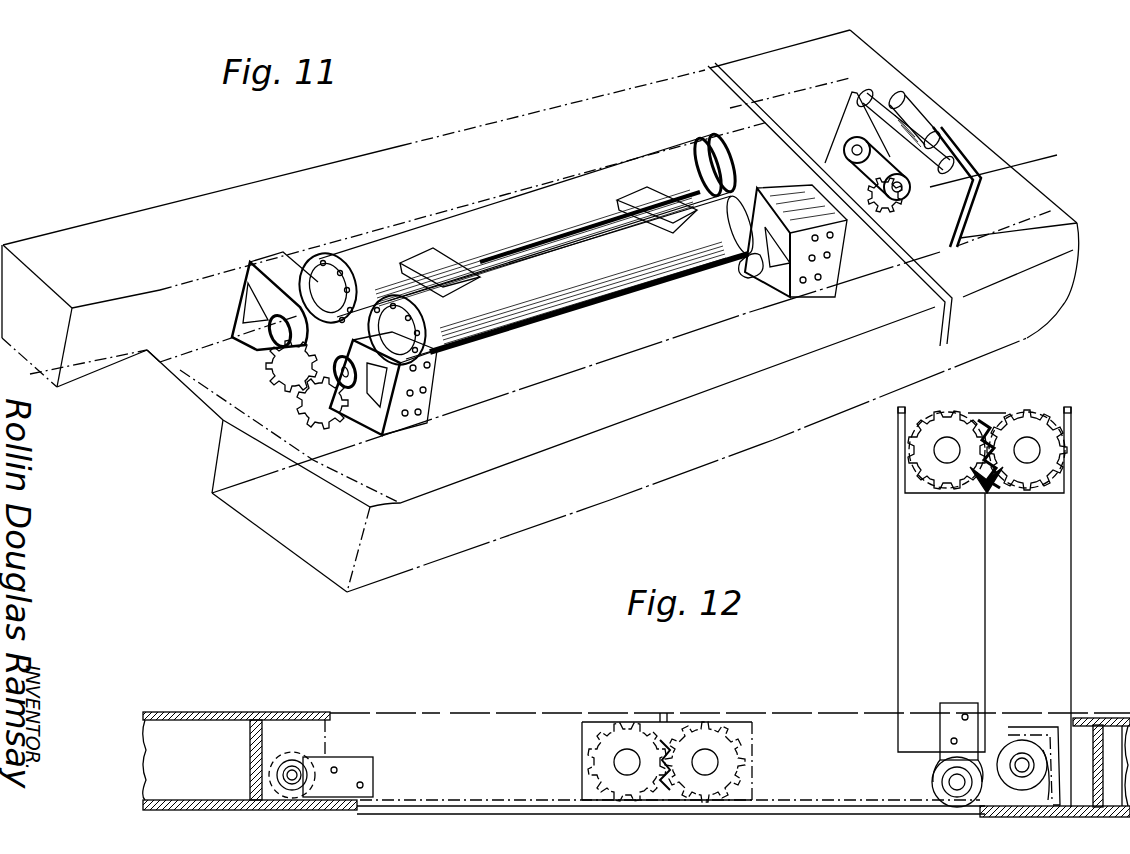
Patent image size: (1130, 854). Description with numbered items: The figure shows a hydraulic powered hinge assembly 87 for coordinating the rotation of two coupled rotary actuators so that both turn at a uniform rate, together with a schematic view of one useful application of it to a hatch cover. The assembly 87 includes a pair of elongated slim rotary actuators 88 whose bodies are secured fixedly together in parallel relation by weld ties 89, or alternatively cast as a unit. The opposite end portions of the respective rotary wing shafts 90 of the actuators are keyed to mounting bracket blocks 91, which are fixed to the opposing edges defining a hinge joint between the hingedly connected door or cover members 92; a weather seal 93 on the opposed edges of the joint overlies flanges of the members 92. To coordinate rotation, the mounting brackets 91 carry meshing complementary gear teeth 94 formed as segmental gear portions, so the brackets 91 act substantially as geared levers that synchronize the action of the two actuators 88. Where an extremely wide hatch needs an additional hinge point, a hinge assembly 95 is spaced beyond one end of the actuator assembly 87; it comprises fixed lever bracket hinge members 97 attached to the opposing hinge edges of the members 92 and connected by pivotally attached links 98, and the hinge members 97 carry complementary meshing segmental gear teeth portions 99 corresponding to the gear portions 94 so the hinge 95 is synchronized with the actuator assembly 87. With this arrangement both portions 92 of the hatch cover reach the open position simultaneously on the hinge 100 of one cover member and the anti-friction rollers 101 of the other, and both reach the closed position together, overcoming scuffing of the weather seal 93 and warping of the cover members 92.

In FIG. 11, the hydraulic powered hinge assembly 87 is at (527, 196).
In FIG. 11, the rotary actuators 88 is at (466, 234).
In FIG. 12, the rotary actuators 88 is at (633, 722).
In FIG. 11, the weld ties 89 is at (462, 283).
In FIG. 12, the weld ties 89 is at (987, 413).
In FIG. 11, the rotary wing shafts 90 is at (268, 340).
In FIG. 12, the rotary wing shafts 90 is at (947, 462).
In FIG. 11, the mounting bracket blocks 91 is at (272, 262).
In FIG. 11, the cover members 92 is at (100, 272).
In FIG. 12, the cover members 92 is at (470, 712).
In FIG. 11, the weather seal 93 is at (150, 362).
In FIG. 12, the weather seal 93 is at (665, 720).
In FIG. 11, the gear teeth 94 is at (288, 372).
In FIG. 12, the gear teeth 94 is at (968, 413).
In FIG. 11, the hinge assembly 95 is at (900, 94).
In FIG. 11, the lever bracket hinge members 97 is at (860, 95).
In FIG. 11, the links 98 is at (845, 142).
In FIG. 11, the segmental gear teeth portions 99 is at (878, 208).
In FIG. 12, the hinge 100 is at (1022, 770).
In FIG. 12, the anti-friction rollers 101 is at (308, 756).